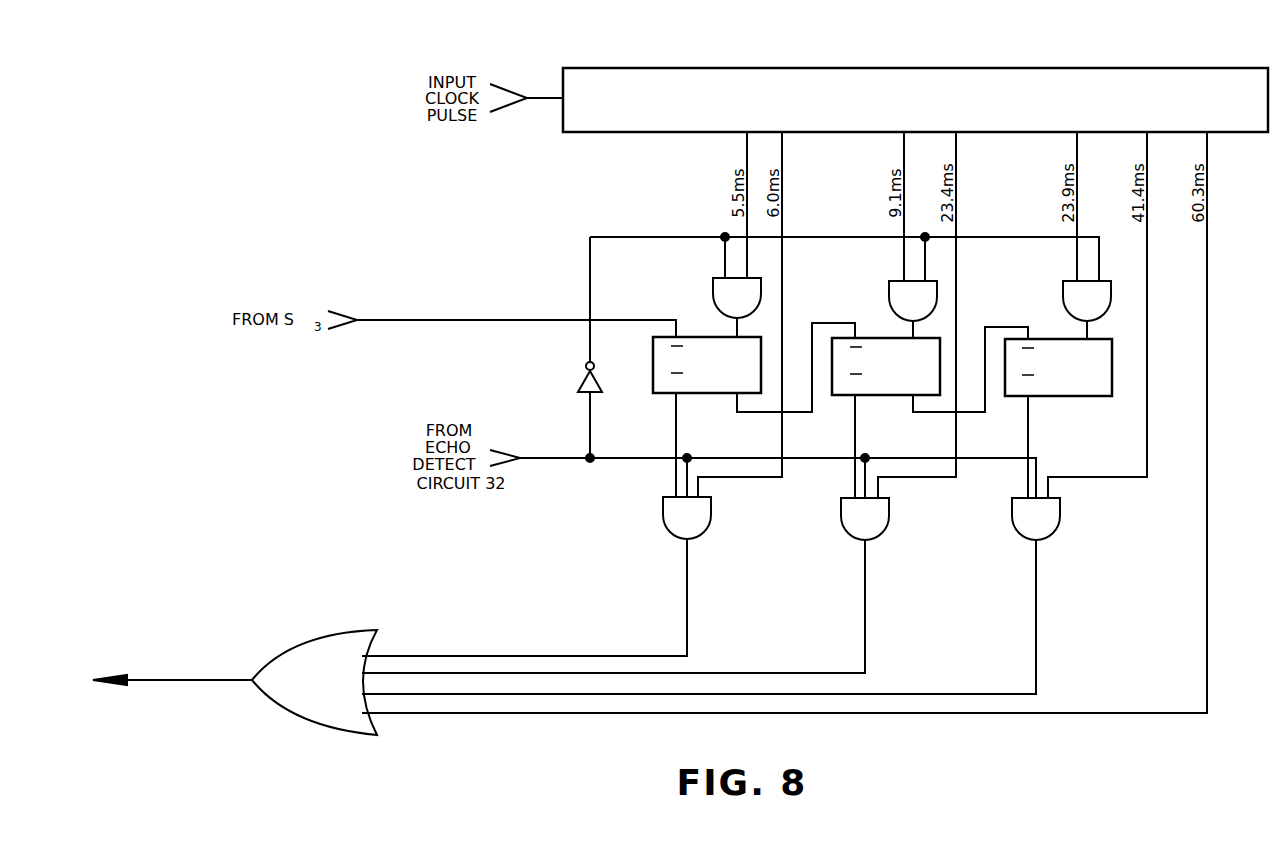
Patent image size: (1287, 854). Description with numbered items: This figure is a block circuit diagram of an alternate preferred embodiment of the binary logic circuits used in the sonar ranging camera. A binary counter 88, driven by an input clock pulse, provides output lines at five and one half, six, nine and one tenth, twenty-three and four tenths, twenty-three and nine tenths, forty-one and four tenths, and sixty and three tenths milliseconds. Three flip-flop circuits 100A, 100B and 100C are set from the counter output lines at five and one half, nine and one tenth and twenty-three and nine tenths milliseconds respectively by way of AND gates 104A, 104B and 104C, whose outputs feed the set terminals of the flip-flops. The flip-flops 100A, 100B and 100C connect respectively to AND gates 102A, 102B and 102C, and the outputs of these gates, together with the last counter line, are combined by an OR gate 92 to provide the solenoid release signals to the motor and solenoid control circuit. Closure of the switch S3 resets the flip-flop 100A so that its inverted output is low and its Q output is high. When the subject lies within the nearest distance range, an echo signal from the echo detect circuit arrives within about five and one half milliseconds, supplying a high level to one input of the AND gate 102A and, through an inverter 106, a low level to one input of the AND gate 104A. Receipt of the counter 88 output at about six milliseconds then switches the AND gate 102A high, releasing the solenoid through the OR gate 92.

The counter 88 is at (1017, 68).
The OR gate 92 is at (306, 640).
The flip-flop circuit 100A is at (691, 337).
The flip-flop circuit 100B is at (873, 338).
The flip-flop circuit 100C is at (1060, 339).
The AND gate 102A is at (663, 512).
The AND gate 102B is at (843, 512).
The AND gate 102C is at (1013, 512).
The AND gate 104A is at (758, 295).
The AND gate 104B is at (935, 297).
The AND gate 104C is at (1109, 297).
The inverter 106 is at (581, 384).